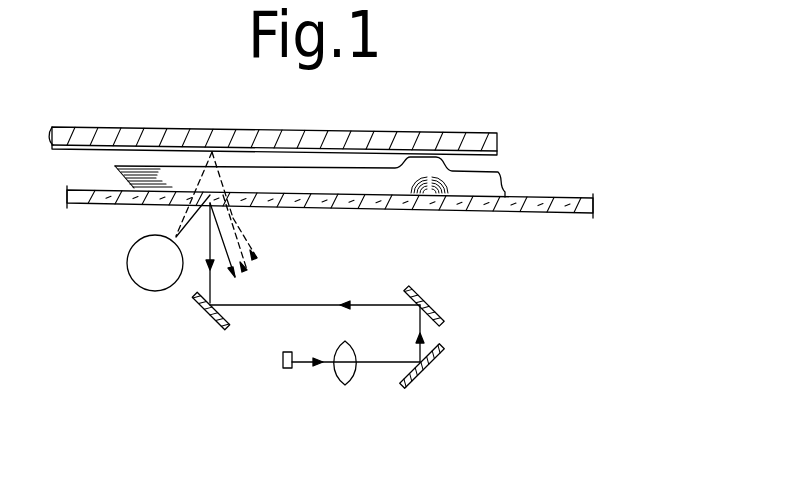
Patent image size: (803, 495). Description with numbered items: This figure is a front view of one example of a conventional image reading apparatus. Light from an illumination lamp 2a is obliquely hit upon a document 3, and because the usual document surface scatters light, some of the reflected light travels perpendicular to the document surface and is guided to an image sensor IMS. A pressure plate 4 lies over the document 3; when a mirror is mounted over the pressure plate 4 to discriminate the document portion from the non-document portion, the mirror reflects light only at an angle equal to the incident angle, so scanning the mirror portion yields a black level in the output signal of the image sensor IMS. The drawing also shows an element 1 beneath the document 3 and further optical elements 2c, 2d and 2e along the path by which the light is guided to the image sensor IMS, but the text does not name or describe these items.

The substrate plate 1 is at (535, 213).
The document 3 is at (349, 183).
The pressure plate 4 is at (157, 137).
The illumination lamp 2a is at (128, 264).
The mirror 2c is at (207, 318).
The mirror 2d is at (445, 308).
The mirror 2e is at (442, 368).
The image sensor IMS is at (284, 351).